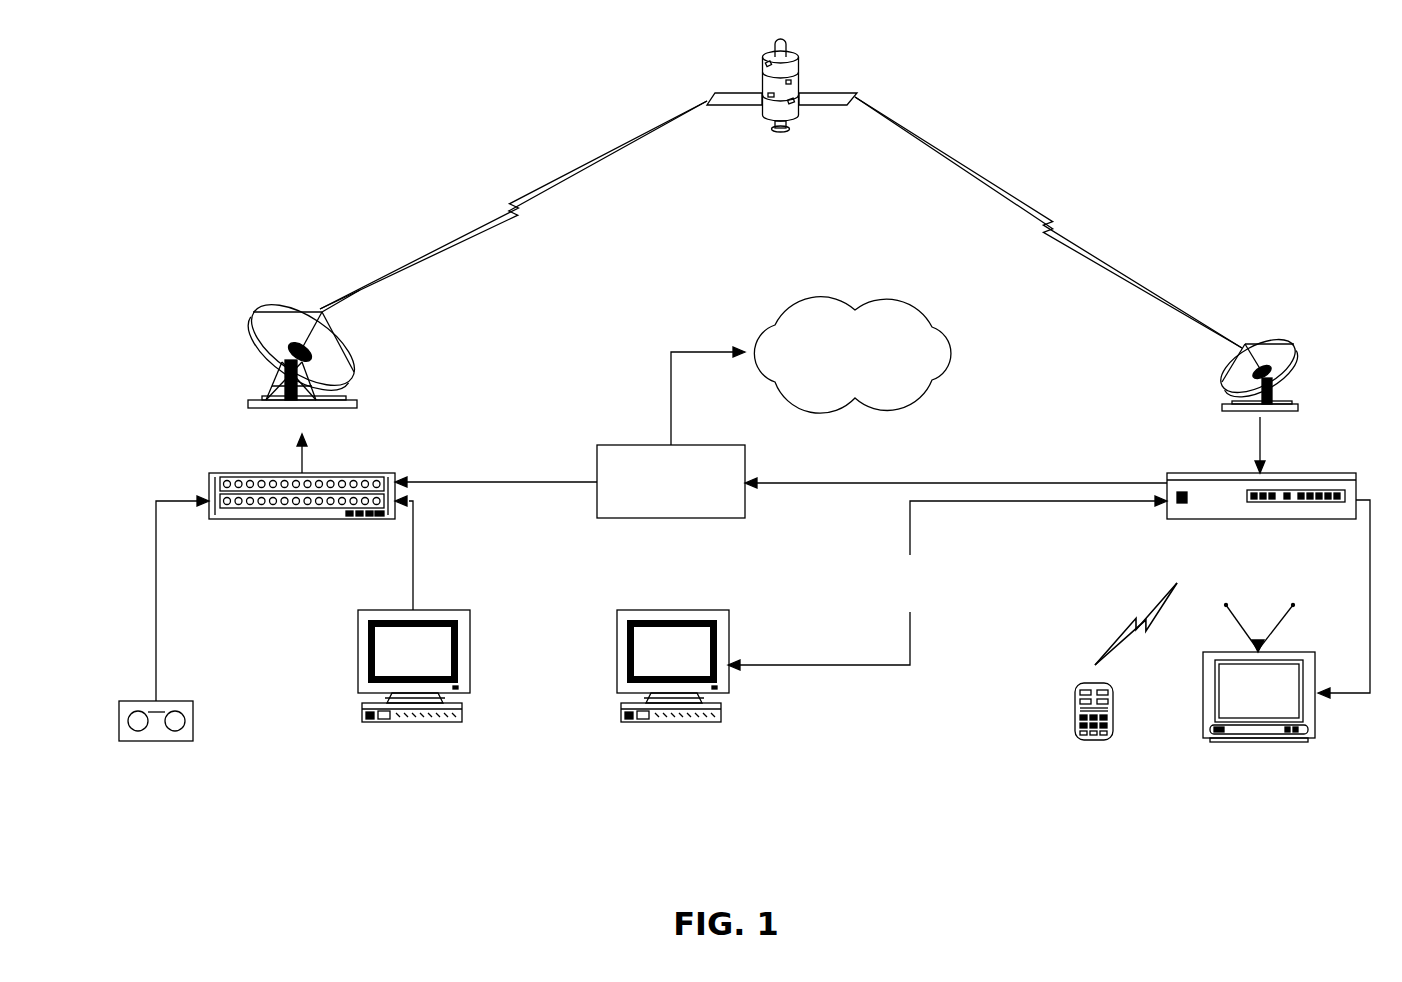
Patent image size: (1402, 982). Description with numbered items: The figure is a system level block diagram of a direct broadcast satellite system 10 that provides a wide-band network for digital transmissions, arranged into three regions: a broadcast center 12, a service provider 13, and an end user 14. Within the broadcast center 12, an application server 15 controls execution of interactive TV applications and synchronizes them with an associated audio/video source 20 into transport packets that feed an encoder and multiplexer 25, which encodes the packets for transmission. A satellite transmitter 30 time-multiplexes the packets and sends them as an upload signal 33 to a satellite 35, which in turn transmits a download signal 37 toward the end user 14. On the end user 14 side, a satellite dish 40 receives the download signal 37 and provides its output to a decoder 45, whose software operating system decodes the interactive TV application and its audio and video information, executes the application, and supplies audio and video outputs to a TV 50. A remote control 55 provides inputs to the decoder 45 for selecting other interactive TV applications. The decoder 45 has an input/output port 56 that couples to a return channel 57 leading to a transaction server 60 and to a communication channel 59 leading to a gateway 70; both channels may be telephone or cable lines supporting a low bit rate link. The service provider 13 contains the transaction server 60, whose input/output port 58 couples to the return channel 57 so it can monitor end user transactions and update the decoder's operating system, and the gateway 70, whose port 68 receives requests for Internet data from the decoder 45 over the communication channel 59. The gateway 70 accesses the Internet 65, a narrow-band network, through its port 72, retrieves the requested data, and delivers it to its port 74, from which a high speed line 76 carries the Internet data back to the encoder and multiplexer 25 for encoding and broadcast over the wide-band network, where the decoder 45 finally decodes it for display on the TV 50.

The direct broadcast satellite system 10 is at (278, 88).
The broadcast center 12 is at (311, 850).
The service provider 13 is at (718, 850).
The end user 14 is at (1194, 850).
The application server 15 is at (412, 647).
The audio/video source 20 is at (156, 656).
The encoder and multiplexer 25 is at (302, 533).
The satellite transmitter 30 is at (301, 381).
The upload signal 33 is at (513, 205).
The satellite 35 is at (782, 97).
The download signal 37 is at (1048, 222).
The satellite dish 40 is at (1260, 401).
The decoder 45 is at (1268, 585).
The TV 50 is at (1259, 699).
The remote control 55 is at (1112, 702).
The input/output port 56 is at (1137, 518).
The return channel 57 is at (947, 583).
The input/output port 58 is at (758, 650).
The communication channel 59 is at (843, 503).
The transaction server 60 is at (670, 704).
The Internet 65 is at (852, 355).
The port 68 is at (956, 467).
The gateway 70 is at (671, 481).
The port 72 is at (708, 396).
The port 74 is at (502, 462).
The high speed line 76 is at (460, 498).